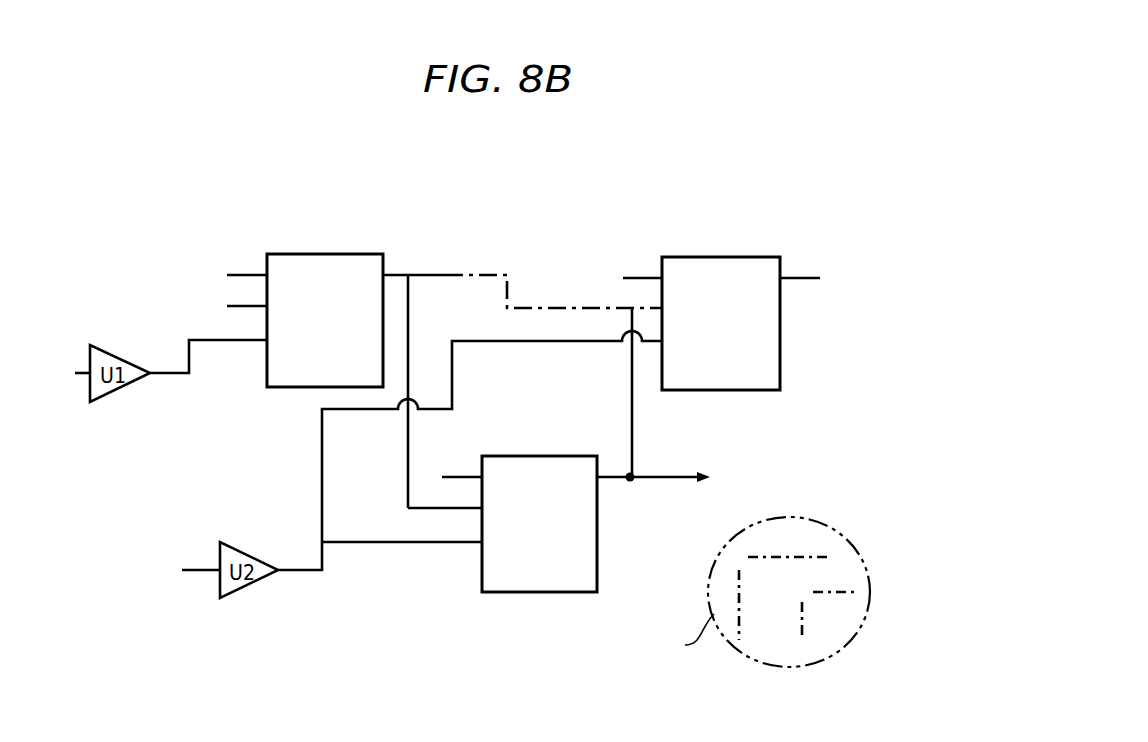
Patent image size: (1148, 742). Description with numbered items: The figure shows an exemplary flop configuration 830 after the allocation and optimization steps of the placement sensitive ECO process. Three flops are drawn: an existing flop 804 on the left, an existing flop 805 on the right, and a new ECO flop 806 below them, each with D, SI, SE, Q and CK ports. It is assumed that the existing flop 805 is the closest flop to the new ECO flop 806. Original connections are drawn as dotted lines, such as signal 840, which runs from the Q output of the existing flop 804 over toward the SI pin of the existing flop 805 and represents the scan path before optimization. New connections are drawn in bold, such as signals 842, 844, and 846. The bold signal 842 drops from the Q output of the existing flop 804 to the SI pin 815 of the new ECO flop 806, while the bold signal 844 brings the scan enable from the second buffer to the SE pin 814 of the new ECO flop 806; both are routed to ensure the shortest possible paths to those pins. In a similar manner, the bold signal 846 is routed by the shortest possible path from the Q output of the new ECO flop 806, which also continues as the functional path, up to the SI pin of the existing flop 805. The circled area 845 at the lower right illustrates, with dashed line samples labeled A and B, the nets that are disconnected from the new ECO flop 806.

The existing flop 804 is at (300, 222).
The existing flop 805 is at (755, 228).
The new ECO flop 806 is at (535, 425).
The SE pin 814 is at (480, 540).
The SI pin 815 is at (480, 506).
The flop configuration 830 is at (599, 169).
The signal 840 is at (487, 276).
The signal 842 is at (410, 316).
The signal 844 is at (365, 543).
The circled area 845 is at (853, 552).
The signal 846 is at (632, 440).